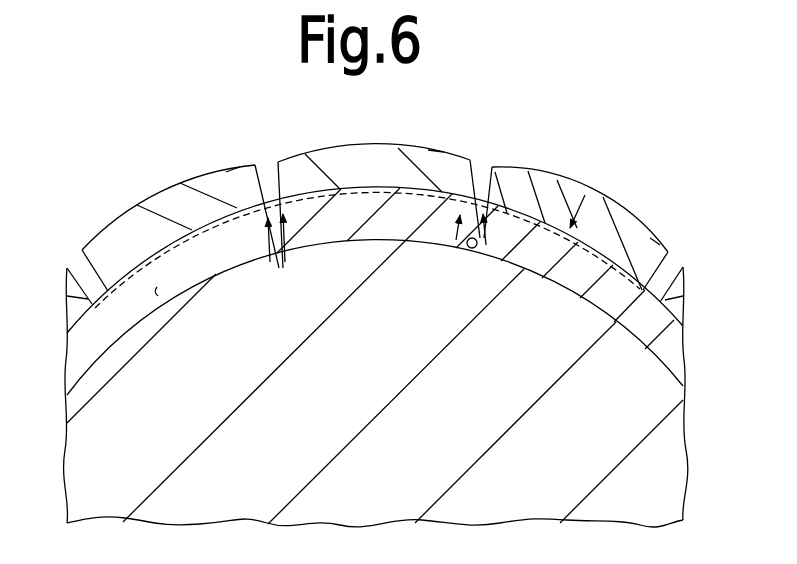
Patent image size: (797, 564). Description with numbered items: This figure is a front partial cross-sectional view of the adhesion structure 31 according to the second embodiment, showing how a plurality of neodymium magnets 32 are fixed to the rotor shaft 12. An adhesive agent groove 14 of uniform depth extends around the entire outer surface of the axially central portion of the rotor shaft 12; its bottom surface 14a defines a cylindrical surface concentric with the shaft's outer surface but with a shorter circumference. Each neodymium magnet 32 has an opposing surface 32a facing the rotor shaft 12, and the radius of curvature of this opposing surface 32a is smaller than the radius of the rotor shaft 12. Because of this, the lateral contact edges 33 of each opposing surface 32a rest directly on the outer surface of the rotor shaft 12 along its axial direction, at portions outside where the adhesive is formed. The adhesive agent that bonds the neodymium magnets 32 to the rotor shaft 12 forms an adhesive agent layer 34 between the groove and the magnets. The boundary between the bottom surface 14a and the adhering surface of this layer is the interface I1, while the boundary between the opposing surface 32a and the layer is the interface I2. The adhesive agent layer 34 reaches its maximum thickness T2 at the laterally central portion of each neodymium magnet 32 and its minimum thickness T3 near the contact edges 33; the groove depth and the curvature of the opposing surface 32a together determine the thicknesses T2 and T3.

The rotor shaft 12 is at (684, 441).
The adhesive agent groove 14 is at (666, 361).
The bottom surface 14a is at (212, 257).
The adhesion structure 31 is at (678, 161).
The neodymium magnet 32 is at (171, 188).
The opposing surface 32a is at (229, 215).
The contact edge 33 is at (105, 287).
The adhesive agent layer 34 is at (161, 293).
The interface I1 is at (322, 245).
The interface I2 is at (129, 255).
The maximum thickness T2 is at (578, 262).
The minimum thickness T3 is at (471, 250).